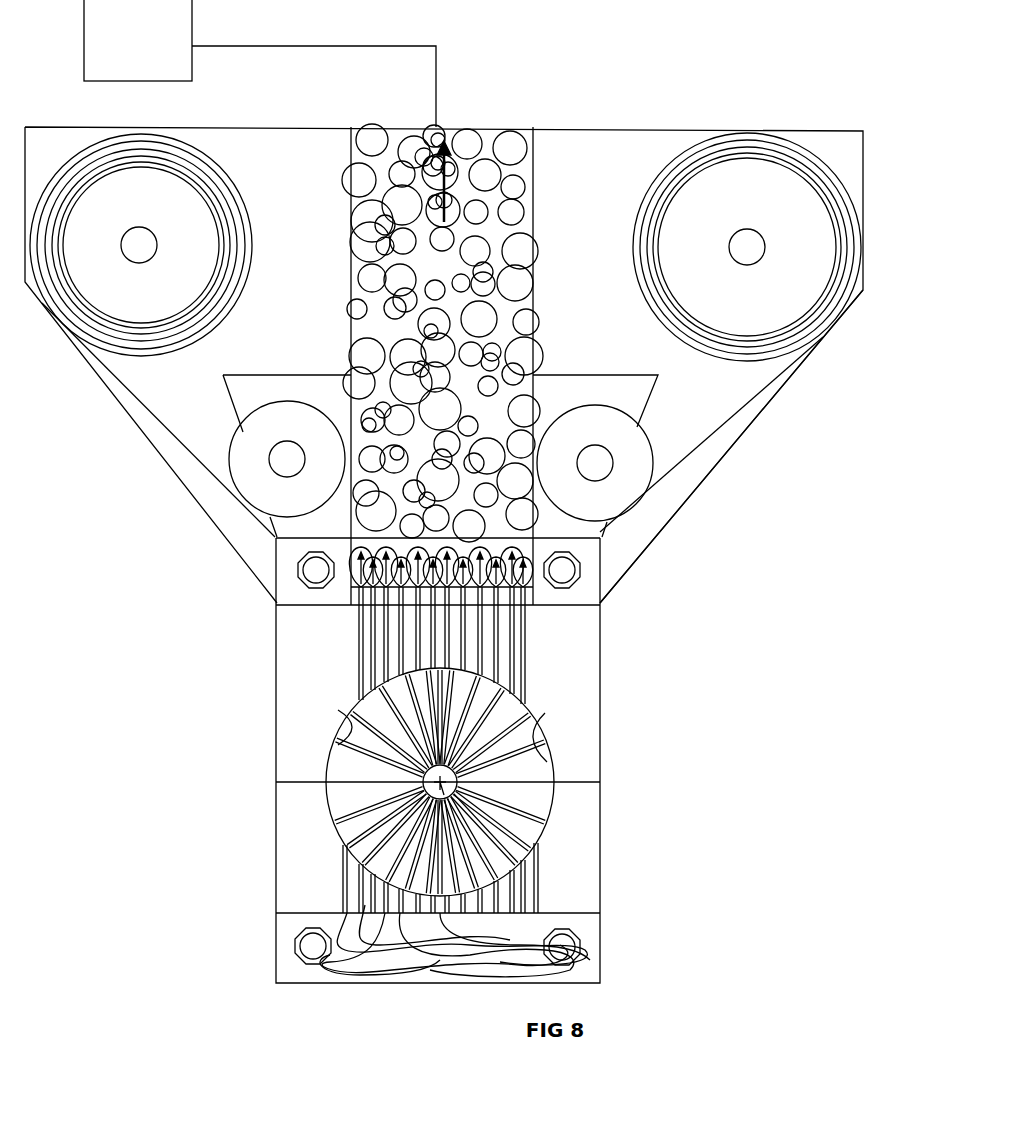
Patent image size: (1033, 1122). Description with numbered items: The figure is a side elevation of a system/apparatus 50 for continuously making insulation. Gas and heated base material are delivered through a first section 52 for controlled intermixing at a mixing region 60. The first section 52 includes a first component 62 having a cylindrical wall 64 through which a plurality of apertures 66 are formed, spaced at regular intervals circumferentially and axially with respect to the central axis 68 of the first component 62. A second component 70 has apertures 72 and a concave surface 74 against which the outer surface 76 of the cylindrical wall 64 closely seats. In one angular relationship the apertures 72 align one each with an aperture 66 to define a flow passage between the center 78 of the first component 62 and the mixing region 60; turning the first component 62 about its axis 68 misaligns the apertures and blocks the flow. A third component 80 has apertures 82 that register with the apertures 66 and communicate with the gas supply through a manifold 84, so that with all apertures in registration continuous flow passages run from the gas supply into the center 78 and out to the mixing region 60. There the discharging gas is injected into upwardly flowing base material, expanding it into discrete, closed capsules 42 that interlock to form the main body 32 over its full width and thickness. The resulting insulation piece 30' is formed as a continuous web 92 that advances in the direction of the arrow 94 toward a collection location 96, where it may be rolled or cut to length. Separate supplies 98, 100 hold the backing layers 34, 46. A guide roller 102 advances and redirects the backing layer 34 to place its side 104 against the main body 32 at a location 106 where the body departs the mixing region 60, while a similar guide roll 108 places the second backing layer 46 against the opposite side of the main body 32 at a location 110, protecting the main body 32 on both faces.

The system/apparatus 50 is at (640, 110).
The collection location 96 is at (138, 40).
The arrow 94 is at (450, 183).
The continuous web 92 is at (535, 305).
The capsules 42 is at (500, 280).
The main body 32 is at (403, 307).
The insulation piece 30' is at (546, 339).
The supply of backing layer 100 is at (75, 333).
The supply of backing layer 98 is at (822, 338).
The second backing layer 46 is at (122, 390).
The side of backing layer 104 is at (665, 485).
The backing layer 34 is at (700, 451).
The location 110 is at (350, 457).
The guide roll 108 is at (283, 428).
The location 106 is at (540, 452).
The guide roller 102 is at (625, 475).
The mixing region 60 is at (417, 573).
The second component 70 is at (558, 705).
The apertures 72 is at (420, 640).
The concave surface 74 is at (360, 720).
The first component 62 is at (530, 817).
The cylindrical wall 64 is at (352, 850).
The apertures 66 is at (532, 745).
The first section 52 is at (625, 768).
The apertures 82 is at (547, 890).
The third component 80 is at (580, 902).
The manifold 84 is at (293, 963).
The center of first component 78 is at (348, 913).
The outer surface 76 is at (402, 923).
The central axis 68 is at (443, 913).